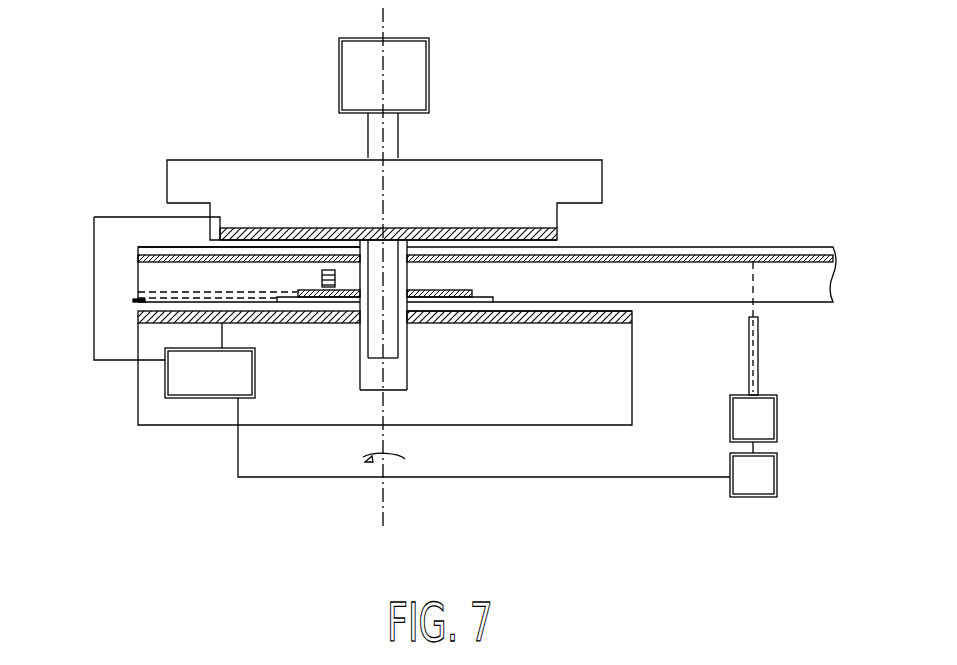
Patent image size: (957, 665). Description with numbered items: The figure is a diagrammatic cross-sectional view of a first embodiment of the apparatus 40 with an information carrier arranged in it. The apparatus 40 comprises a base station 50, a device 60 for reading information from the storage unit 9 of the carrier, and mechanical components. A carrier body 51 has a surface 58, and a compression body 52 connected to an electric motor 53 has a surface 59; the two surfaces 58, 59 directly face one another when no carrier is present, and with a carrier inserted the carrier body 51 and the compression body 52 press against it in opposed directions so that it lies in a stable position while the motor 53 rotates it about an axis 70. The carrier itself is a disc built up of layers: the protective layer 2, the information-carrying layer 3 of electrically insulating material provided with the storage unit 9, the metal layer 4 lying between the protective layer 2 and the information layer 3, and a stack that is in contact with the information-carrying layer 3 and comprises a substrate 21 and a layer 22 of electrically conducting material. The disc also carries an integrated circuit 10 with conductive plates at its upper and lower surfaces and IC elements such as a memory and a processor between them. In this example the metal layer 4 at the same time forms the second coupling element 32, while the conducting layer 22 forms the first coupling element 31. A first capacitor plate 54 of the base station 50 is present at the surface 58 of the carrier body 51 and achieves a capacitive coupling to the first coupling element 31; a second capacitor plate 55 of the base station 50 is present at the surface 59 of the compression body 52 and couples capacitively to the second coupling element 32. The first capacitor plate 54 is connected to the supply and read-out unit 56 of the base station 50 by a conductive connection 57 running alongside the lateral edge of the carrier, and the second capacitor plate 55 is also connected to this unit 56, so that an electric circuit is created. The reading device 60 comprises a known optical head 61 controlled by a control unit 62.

The protective layer 2 is at (155, 250).
The information-carrying layer 3 is at (178, 270).
The metal layer 4 is at (138, 260).
The storage unit 9 is at (684, 285).
The integrated circuit 10 is at (319, 278).
The substrate 21 is at (133, 299).
The layer of electrically conducting material 22 is at (138, 292).
The first coupling element 31 is at (331, 303).
The second coupling element 32 is at (327, 247).
The apparatus 40 is at (258, 97).
The base station 50 is at (122, 205).
The carrier body 51 is at (508, 405).
The compression body 52 is at (497, 170).
The electric motor 53 is at (429, 58).
The first capacitor plate 54 is at (278, 323).
The second capacitor plate 55 is at (490, 228).
The supply and read-out unit 56 is at (195, 398).
The conductive connection 57 is at (94, 343).
The surface 58 is at (453, 313).
The surface 59 is at (440, 228).
The device for reading information 60 is at (703, 455).
The optical head 61 is at (777, 415).
The control unit 62 is at (777, 472).
The axis 70 is at (384, 516).